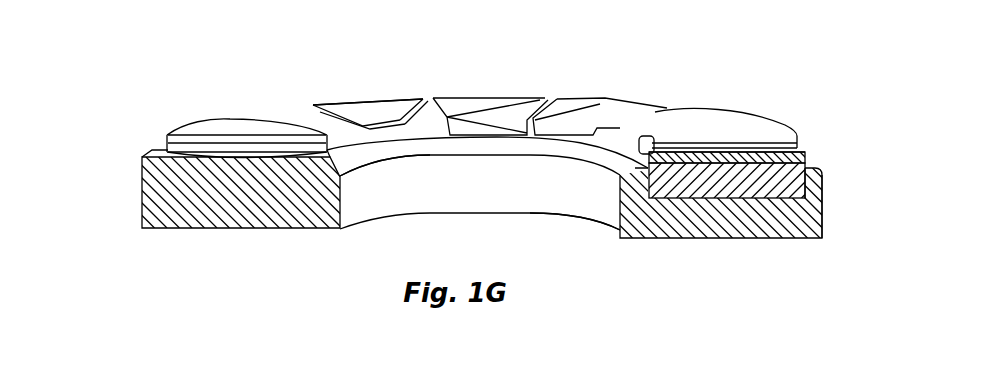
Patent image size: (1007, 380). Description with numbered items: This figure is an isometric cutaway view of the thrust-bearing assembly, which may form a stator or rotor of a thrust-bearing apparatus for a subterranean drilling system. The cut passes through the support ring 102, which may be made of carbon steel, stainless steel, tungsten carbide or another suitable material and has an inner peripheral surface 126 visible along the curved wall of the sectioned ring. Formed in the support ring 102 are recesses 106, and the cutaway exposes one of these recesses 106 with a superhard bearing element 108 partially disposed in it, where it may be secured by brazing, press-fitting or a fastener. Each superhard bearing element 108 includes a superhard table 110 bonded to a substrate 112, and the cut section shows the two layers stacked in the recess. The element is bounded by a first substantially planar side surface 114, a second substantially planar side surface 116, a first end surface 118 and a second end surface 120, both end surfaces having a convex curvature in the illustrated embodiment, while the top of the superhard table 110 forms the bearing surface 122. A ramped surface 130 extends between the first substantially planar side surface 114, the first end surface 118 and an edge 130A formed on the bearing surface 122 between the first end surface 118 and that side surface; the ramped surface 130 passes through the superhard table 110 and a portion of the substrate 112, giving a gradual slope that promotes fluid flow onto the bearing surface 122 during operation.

The support ring 102 is at (136, 190).
The recesses 106 is at (762, 199).
The superhard bearing elements 108 is at (377, 92).
The superhard table 110 is at (800, 155).
The substrate 112 is at (795, 177).
The first substantially planar side surface 114 is at (424, 112).
The second substantially planar side surface 116 is at (335, 110).
The first end surface 118 is at (386, 122).
The second end surface 120 is at (815, 190).
The bearing surface 122 is at (780, 148).
The inner peripheral surface 126 is at (578, 205).
The ramped surface 130 is at (438, 110).
The edge 130A is at (411, 105).